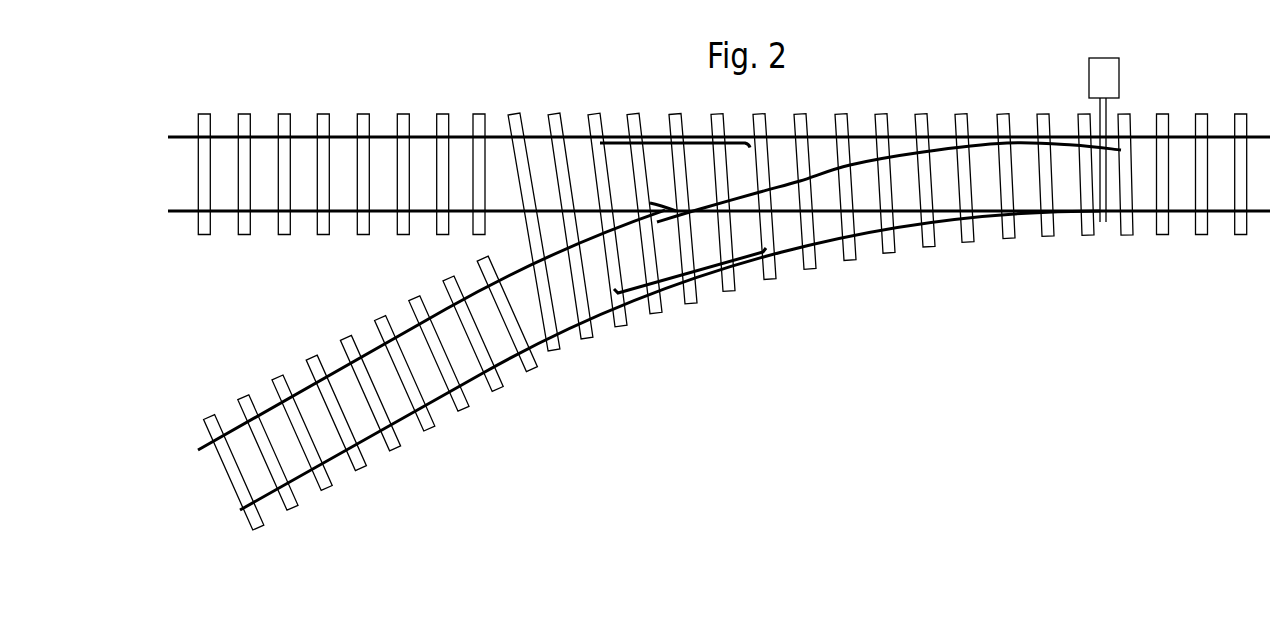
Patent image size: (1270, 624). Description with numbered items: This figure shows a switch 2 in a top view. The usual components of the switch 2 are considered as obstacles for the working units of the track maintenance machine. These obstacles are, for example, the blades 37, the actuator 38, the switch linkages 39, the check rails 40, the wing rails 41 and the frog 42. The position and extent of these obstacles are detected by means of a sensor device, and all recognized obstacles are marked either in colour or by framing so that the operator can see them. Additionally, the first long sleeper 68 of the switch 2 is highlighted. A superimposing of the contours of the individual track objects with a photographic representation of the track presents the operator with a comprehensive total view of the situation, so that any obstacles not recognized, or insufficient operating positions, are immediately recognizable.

The switch 2 is at (407, 50).
The blades 37 is at (1057, 135).
The actuator 38 is at (1110, 82).
The switch linkages 39 is at (1103, 182).
The check rails 40 is at (756, 266).
The wing rails 41 is at (672, 222).
The frog 42 is at (665, 203).
The first long sleeper 68 is at (552, 346).